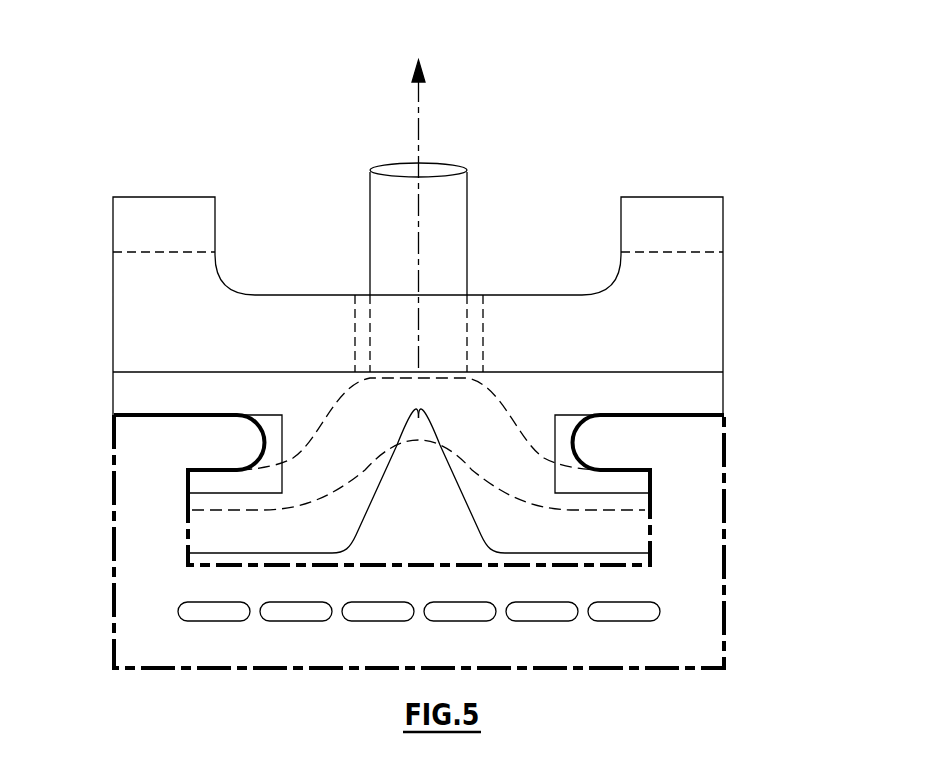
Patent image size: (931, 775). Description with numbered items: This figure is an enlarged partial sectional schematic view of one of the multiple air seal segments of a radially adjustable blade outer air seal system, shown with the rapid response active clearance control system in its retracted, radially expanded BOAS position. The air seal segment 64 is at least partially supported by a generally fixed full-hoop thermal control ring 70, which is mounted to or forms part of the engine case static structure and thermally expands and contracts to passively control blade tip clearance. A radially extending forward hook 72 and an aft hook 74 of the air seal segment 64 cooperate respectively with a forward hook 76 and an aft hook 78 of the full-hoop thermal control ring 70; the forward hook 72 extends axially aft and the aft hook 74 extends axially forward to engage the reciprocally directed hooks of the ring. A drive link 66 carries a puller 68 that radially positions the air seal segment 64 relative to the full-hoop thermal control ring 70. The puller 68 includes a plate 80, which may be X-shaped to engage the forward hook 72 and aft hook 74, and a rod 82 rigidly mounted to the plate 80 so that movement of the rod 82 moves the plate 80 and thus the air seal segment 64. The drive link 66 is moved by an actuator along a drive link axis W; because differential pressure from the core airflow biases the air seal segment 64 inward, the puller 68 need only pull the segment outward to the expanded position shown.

The air seal segment 64 is at (688, 603).
The drive link 66 is at (348, 214).
The puller 68 is at (502, 433).
The full-hoop thermal control ring 70 is at (734, 320).
The forward hook 72 is at (157, 435).
The aft hook 74 is at (680, 434).
The forward hook 76 is at (302, 515).
The aft hook 78 is at (536, 515).
The plate 80 is at (337, 433).
The rod 82 is at (443, 220).
The drive link axis W is at (418, 199).